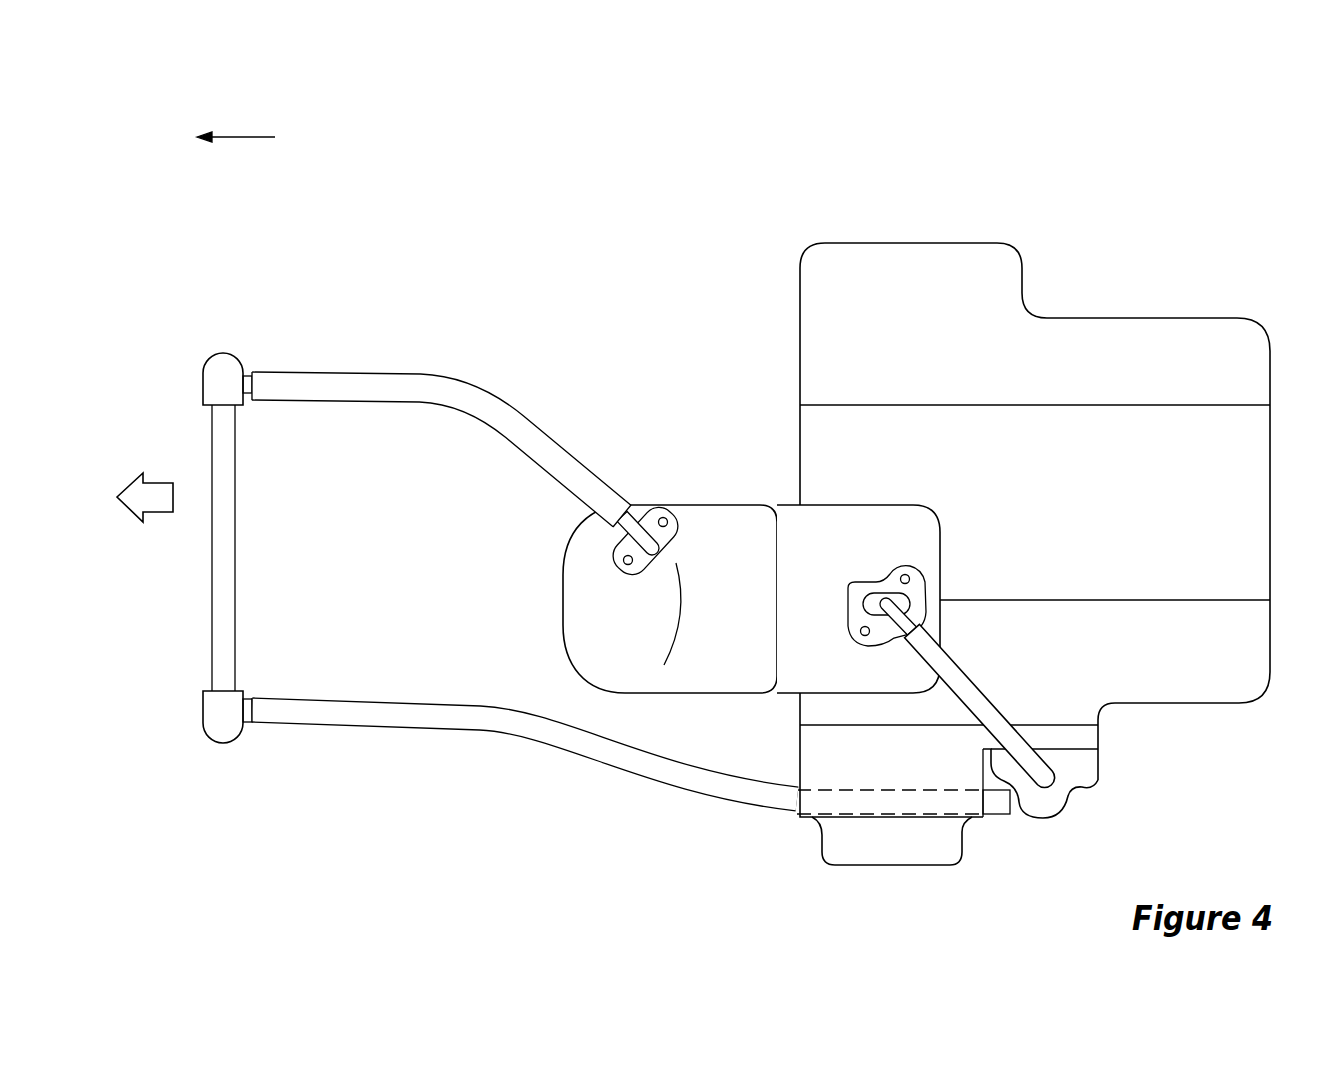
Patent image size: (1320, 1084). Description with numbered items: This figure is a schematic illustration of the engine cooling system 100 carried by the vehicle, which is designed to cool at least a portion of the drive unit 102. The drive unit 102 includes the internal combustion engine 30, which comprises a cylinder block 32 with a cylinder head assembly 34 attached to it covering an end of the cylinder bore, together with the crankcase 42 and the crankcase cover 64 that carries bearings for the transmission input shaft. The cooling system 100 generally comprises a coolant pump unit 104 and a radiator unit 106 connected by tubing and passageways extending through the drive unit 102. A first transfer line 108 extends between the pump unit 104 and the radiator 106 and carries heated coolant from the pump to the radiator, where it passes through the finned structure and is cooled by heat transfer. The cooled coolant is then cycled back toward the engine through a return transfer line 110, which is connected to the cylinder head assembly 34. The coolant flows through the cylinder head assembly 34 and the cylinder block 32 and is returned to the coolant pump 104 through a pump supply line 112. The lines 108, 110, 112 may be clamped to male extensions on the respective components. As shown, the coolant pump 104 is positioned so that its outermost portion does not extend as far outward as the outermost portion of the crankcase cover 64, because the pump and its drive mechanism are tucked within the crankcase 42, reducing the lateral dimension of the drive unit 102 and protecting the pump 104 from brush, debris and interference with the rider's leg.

The internal combustion engine 30 is at (542, 513).
The cylinder block 32 is at (788, 512).
The cylinder head assembly 34 is at (580, 605).
The crankcase 42 is at (826, 437).
The crankcase cover 64 is at (1100, 318).
The engine cooling system 100 is at (693, 529).
The drive unit 102 is at (792, 332).
The coolant pump unit 104 is at (1092, 795).
The radiator unit 106 is at (236, 592).
The first transfer line 108 is at (421, 729).
The return transfer line 110 is at (403, 372).
The pump supply line 112 is at (978, 682).